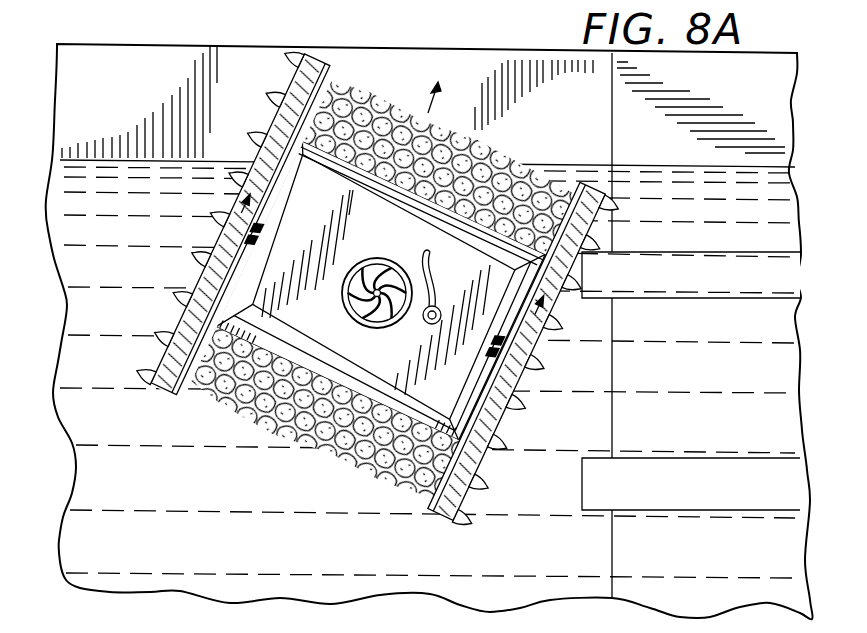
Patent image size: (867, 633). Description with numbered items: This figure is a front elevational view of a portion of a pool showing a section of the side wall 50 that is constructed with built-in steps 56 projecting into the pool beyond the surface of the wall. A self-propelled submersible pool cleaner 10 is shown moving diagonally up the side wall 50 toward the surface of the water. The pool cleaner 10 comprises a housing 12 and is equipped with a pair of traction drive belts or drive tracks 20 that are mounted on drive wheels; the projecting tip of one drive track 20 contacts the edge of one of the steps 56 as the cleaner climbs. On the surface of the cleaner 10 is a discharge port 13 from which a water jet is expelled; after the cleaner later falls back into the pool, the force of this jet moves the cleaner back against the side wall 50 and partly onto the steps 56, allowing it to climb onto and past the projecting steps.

The self-propelled submersible pool cleaner 10 is at (372, 92).
The housing 12 is at (207, 290).
The discharge port 13 is at (356, 321).
The traction drive belt 20 is at (500, 421).
The side wall 50 is at (58, 268).
The built-in steps 56 is at (683, 290).